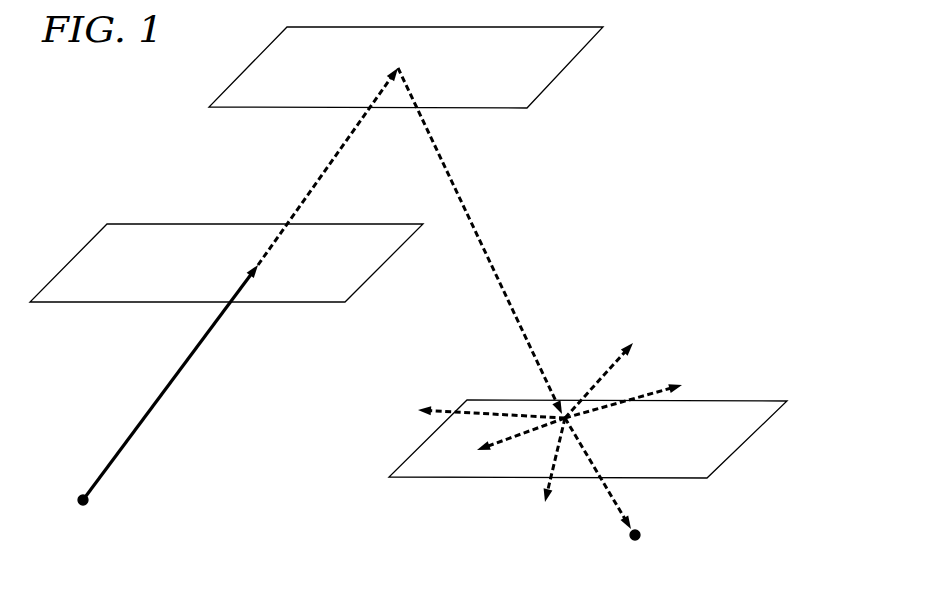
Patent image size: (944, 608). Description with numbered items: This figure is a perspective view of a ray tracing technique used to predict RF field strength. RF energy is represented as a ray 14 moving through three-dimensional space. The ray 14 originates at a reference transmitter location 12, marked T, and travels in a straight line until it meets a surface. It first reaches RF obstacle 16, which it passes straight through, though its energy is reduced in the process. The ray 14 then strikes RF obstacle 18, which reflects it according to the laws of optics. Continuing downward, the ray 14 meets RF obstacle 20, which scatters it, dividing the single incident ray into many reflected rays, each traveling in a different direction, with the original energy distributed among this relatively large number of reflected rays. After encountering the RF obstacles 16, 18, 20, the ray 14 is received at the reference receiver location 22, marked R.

The reference transmitter location 12 is at (87, 503).
The ray 14 is at (143, 423).
The RF obstacle 16 is at (345, 288).
The RF obstacle 18 is at (530, 87).
The RF obstacle 20 is at (712, 467).
The reference receiver location 22 is at (628, 542).